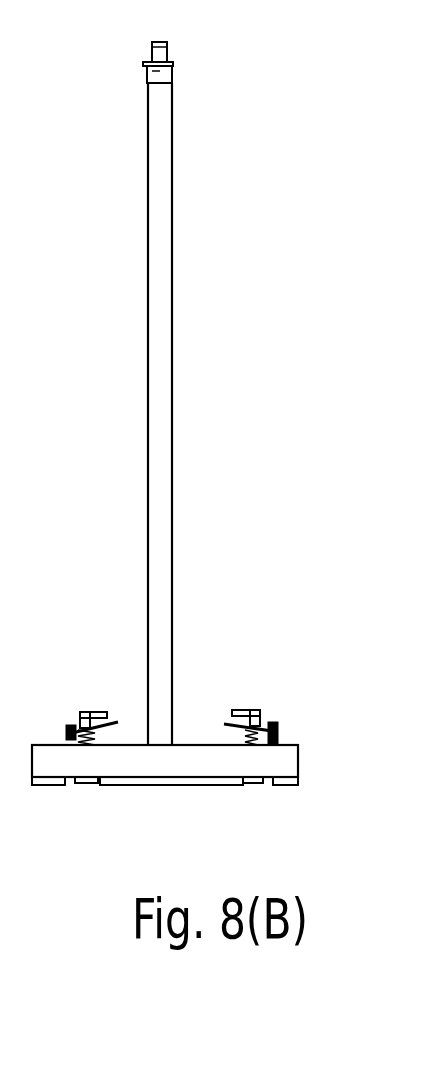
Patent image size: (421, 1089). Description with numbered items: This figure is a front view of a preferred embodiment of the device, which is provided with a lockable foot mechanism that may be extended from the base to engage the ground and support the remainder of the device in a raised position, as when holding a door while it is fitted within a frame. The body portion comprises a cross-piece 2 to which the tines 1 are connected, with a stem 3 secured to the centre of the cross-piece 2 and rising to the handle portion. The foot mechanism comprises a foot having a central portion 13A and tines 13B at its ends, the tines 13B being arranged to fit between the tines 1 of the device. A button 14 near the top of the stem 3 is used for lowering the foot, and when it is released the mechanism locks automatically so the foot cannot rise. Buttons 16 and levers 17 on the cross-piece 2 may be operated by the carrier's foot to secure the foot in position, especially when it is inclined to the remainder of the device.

The tines 1 is at (293, 785).
The cross-piece 2 is at (290, 758).
The stem 3 is at (160, 330).
The central portion 13A is at (198, 780).
The tines 13B is at (92, 779).
The button 14 is at (166, 48).
The buttons 16 is at (83, 712).
The levers 17 is at (118, 722).